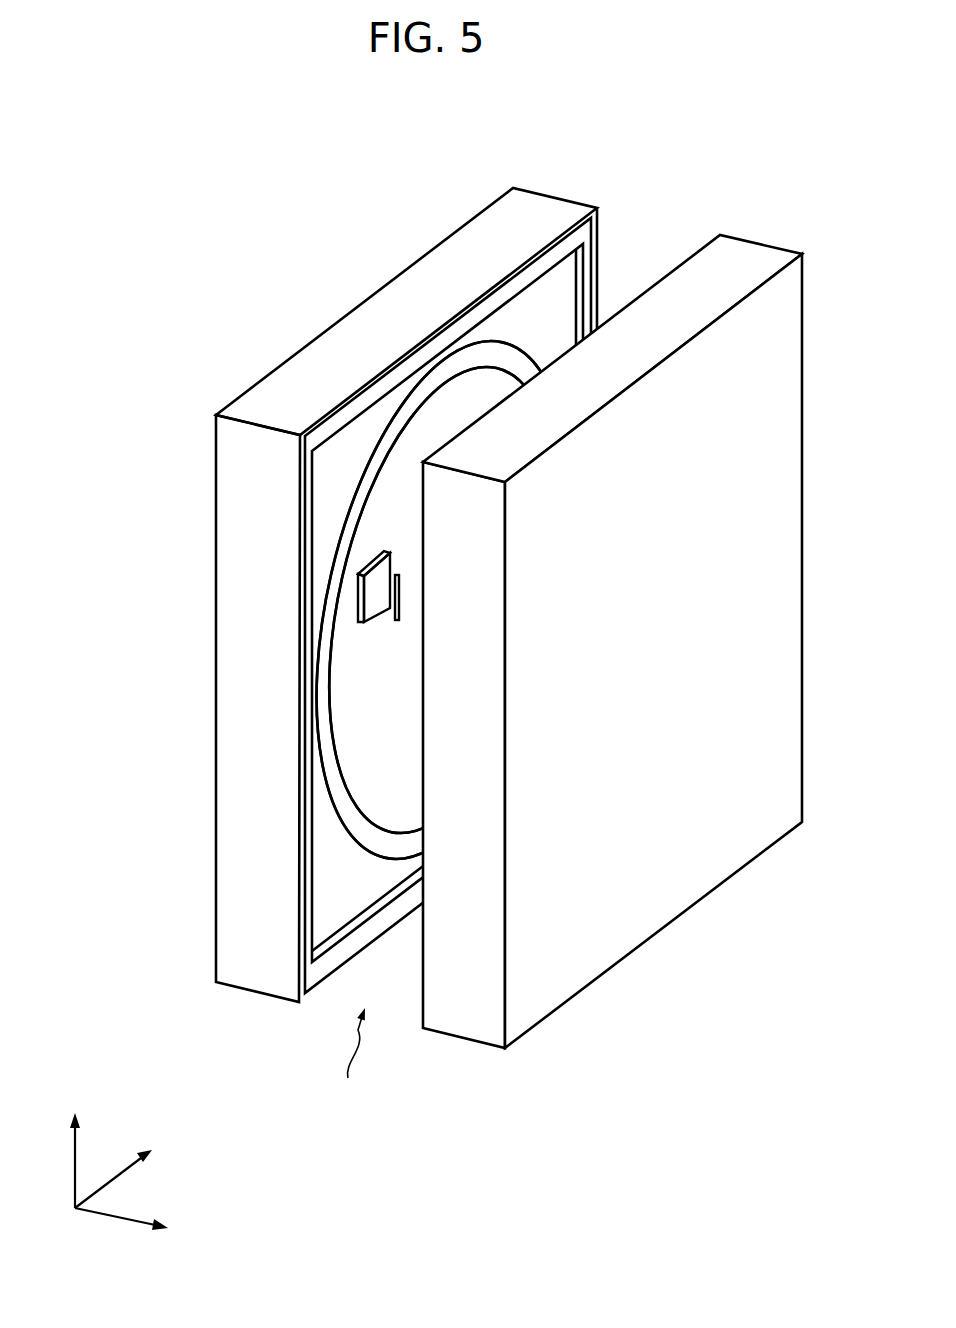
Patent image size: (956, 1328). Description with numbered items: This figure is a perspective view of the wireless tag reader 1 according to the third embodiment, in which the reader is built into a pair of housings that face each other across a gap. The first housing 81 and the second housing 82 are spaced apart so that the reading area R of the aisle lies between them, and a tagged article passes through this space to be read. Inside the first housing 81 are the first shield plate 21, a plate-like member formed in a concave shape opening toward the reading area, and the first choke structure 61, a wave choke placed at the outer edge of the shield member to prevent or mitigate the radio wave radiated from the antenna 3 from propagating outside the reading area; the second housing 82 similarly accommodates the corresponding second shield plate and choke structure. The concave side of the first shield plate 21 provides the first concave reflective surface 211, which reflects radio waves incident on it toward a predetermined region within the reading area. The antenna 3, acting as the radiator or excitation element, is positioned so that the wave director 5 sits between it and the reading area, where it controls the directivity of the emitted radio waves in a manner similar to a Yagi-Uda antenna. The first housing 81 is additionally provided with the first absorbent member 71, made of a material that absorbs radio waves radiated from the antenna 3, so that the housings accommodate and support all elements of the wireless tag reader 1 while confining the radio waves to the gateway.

The wireless tag reader 1 is at (672, 182).
The antenna 3 is at (377, 588).
The wave director 5 is at (388, 617).
The first shield plate 21 is at (330, 710).
The first concave reflective surface 211 is at (357, 755).
The first choke structure 61 is at (357, 823).
The first absorbent member 71 is at (533, 307).
The first housing 81 is at (247, 992).
The second housing 82 is at (460, 1038).